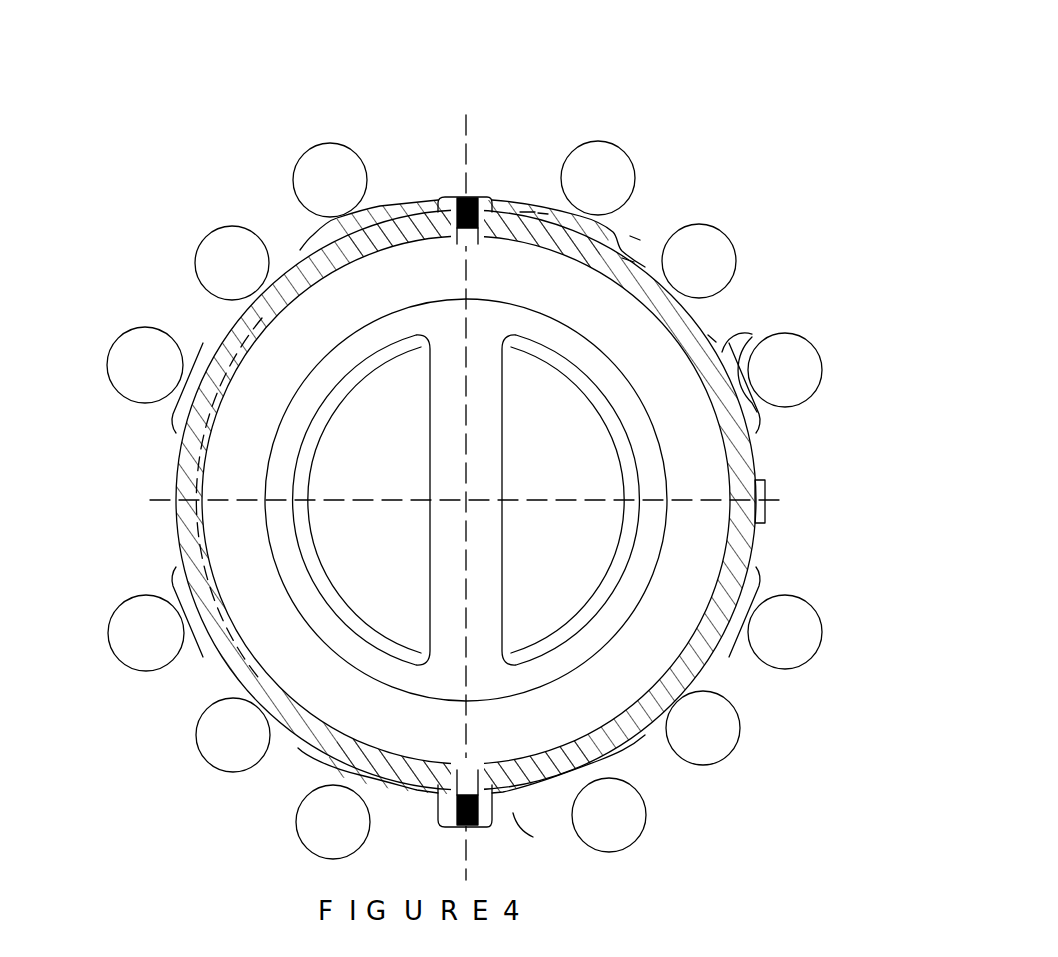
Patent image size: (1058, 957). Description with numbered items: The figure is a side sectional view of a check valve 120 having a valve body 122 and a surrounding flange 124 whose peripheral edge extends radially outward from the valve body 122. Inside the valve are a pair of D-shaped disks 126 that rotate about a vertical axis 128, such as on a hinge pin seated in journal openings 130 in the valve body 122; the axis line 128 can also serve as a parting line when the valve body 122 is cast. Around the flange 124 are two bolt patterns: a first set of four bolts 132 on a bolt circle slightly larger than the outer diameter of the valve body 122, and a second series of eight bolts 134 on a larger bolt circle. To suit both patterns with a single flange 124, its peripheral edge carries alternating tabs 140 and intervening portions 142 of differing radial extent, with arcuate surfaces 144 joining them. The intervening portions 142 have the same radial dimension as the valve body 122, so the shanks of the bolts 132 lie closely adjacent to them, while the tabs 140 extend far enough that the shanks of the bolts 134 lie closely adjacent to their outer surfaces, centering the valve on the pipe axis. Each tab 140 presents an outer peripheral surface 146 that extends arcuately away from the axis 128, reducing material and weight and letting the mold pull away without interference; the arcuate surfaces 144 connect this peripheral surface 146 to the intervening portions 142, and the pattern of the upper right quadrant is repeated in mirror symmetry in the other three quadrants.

The check valve 120 is at (810, 465).
The valve body 122 is at (700, 670).
The flange 124 is at (508, 197).
The D-shaped disks 126 is at (393, 382).
The vertical axis 128 is at (463, 283).
The journal openings 130 is at (450, 232).
The first set of bolts 132 is at (195, 270).
The second series of bolts 134 is at (300, 152).
The tabs 140 is at (527, 210).
The intervening portions 142 is at (628, 258).
The arcuate surfaces 144 is at (636, 235).
The peripheral surface 146 is at (542, 212).